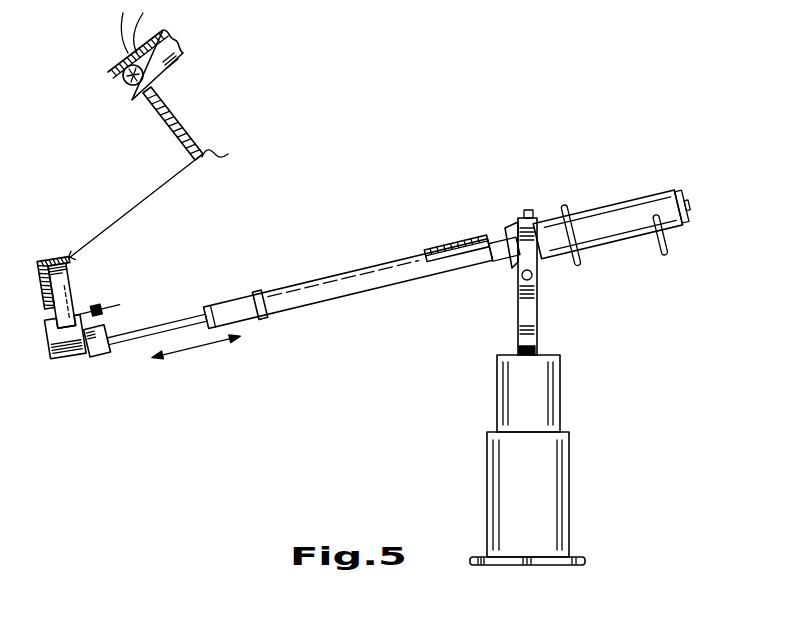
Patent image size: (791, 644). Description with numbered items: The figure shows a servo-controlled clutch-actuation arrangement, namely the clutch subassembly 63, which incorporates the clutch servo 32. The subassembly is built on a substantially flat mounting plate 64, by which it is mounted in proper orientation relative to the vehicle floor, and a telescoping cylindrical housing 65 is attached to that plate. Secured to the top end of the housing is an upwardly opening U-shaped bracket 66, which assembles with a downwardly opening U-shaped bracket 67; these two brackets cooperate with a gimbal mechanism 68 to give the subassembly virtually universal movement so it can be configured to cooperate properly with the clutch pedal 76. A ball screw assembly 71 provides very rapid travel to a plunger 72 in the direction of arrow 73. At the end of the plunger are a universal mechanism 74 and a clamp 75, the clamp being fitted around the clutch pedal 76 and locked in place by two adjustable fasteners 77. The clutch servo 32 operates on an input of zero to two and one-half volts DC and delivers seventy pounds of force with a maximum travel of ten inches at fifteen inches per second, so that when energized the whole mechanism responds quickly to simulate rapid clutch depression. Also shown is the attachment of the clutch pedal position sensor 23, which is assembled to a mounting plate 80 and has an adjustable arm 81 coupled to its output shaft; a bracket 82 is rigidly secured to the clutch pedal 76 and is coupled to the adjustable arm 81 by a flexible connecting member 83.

The clutch pedal position sensor 23 is at (125, 88).
The clutch servo 32 is at (653, 196).
The clutch subassembly 63 is at (466, 202).
The mounting plate 64 is at (579, 556).
The cylindrical housing 65 is at (567, 462).
The upwardly opening U-shaped bracket 66 is at (538, 329).
The downwardly opening U-shaped bracket 67 is at (532, 224).
The gimbal mechanism 68 is at (557, 252).
The ball screw assembly 71 is at (454, 257).
The plunger 72 is at (156, 330).
The arrow 73 is at (203, 346).
The universal mechanism 74 is at (100, 349).
The clamp 75 is at (66, 362).
The clutch pedal 76 is at (69, 290).
The adjustable fasteners 77 is at (101, 313).
The mounting plate 80 is at (184, 52).
The adjustable arm 81 is at (172, 113).
The bracket 82 is at (60, 262).
The flexible connecting member 83 is at (136, 208).